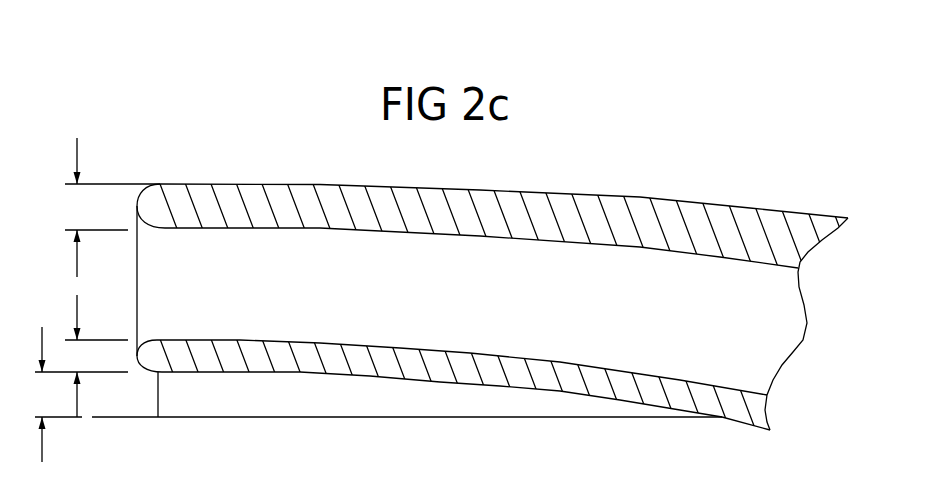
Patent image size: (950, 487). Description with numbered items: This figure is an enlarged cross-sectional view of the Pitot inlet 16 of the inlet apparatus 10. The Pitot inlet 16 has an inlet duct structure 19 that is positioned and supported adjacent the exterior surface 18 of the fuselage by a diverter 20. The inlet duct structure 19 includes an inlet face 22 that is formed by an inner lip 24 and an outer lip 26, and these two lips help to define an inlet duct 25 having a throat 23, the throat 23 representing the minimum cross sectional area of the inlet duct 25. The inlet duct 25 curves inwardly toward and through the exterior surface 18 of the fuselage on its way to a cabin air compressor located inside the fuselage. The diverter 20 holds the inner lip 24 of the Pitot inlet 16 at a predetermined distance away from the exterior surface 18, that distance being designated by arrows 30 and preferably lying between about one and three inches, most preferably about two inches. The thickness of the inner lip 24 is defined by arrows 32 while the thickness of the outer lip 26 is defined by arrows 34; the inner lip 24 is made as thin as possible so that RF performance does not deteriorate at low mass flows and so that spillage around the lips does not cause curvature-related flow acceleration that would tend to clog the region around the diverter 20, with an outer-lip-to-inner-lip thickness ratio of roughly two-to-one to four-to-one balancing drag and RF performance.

The inlet apparatus 10 is at (161, 130).
The Pitot inlet 16 is at (668, 162).
The exterior surface 18 is at (513, 412).
The inlet duct structure 19 is at (520, 210).
The diverter 20 is at (245, 402).
The inlet face 22 is at (137, 275).
The throat 23 is at (165, 305).
The inner lip 24 is at (150, 360).
The inlet duct 25 is at (515, 306).
The outer lip 26 is at (150, 209).
The arrows 30 is at (58, 394).
The arrows 32 is at (81, 356).
The arrows 34 is at (112, 207).